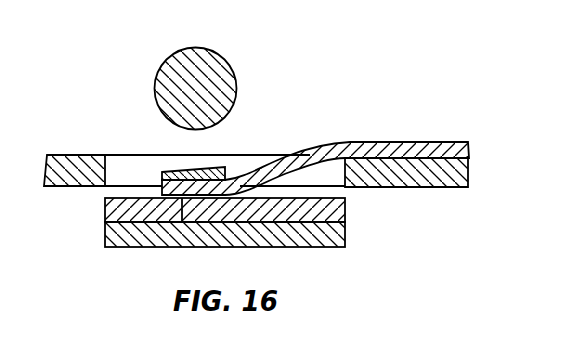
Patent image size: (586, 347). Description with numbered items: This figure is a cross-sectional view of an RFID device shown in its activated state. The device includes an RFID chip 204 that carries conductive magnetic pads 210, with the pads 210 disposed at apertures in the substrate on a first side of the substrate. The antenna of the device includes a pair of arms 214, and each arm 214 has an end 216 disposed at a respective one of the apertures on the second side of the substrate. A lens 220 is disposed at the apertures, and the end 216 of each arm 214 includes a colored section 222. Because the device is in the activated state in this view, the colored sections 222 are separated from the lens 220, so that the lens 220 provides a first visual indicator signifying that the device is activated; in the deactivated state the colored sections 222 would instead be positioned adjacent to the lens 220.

The RFID chip 204 is at (345, 237).
The conductive magnetic pad 210 is at (345, 203).
The arm 214 is at (432, 150).
The end 216 is at (182, 222).
The lens 220 is at (194, 47).
The colored section 222 is at (177, 175).